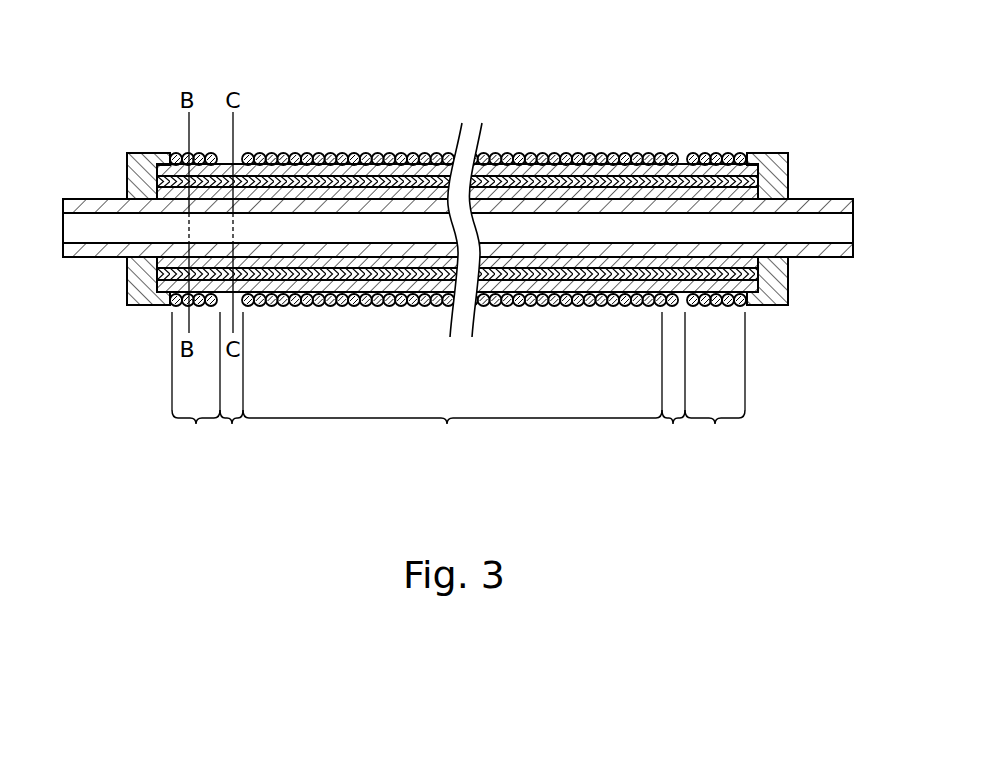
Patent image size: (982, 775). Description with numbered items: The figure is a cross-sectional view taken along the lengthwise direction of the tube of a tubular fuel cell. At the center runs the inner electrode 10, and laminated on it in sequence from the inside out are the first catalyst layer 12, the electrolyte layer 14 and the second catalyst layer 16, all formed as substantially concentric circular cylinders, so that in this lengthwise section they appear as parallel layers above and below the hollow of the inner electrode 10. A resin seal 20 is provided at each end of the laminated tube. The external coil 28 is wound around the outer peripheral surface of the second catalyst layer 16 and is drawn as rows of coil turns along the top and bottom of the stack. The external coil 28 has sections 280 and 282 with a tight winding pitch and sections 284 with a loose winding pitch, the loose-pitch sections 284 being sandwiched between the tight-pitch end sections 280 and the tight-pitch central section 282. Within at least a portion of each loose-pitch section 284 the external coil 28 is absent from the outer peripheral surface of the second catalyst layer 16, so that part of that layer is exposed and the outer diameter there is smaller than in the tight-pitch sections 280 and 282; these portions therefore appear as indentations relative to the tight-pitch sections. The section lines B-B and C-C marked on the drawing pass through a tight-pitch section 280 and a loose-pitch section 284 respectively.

The inner electrode 10 is at (422, 210).
The first catalyst layer 12 is at (390, 195).
The electrolyte layer 14 is at (342, 182).
The second catalyst layer 16 is at (297, 172).
The resin seal 20 is at (130, 172).
The external coil 28 is at (520, 158).
The section with a tight winding pitch 280 is at (458, 383).
The section with a tight winding pitch 282 is at (452, 433).
The section with a loose winding pitch 284 is at (232, 424).